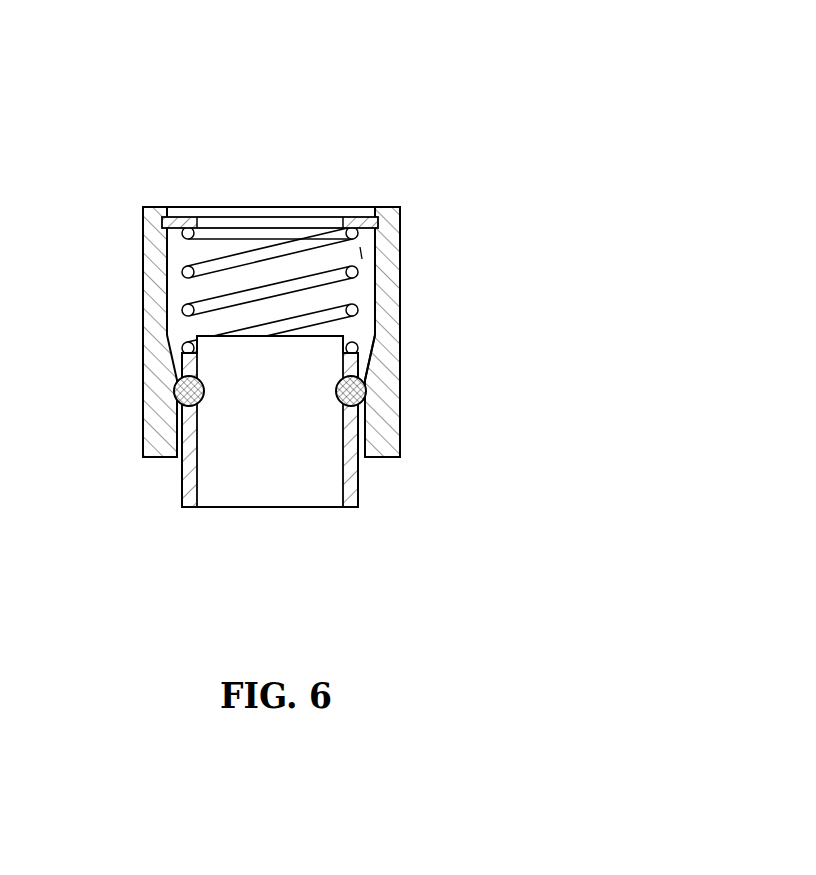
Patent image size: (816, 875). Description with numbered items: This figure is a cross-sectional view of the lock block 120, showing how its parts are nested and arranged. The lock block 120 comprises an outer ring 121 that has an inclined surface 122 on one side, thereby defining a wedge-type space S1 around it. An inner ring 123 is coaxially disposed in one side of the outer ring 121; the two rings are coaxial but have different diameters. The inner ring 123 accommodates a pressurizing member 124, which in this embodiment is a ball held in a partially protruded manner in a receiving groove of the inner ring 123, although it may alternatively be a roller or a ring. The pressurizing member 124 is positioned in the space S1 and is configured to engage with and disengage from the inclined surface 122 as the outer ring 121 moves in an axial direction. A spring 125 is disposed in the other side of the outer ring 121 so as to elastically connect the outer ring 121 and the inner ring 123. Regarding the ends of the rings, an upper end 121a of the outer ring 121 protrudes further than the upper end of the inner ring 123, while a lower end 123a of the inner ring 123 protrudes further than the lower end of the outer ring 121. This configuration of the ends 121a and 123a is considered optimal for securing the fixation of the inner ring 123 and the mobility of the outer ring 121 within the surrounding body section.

The lock block 120 is at (272, 309).
The outer ring 121 is at (400, 307).
The upper end of the outer ring 121a is at (160, 215).
The inclined surface 122 is at (367, 377).
The inner ring 123 is at (182, 480).
The lower end of the inner ring 123a is at (190, 508).
The pressurizing member 124 is at (185, 392).
The spring 125 is at (212, 297).
The wedge-type space S1 is at (367, 252).